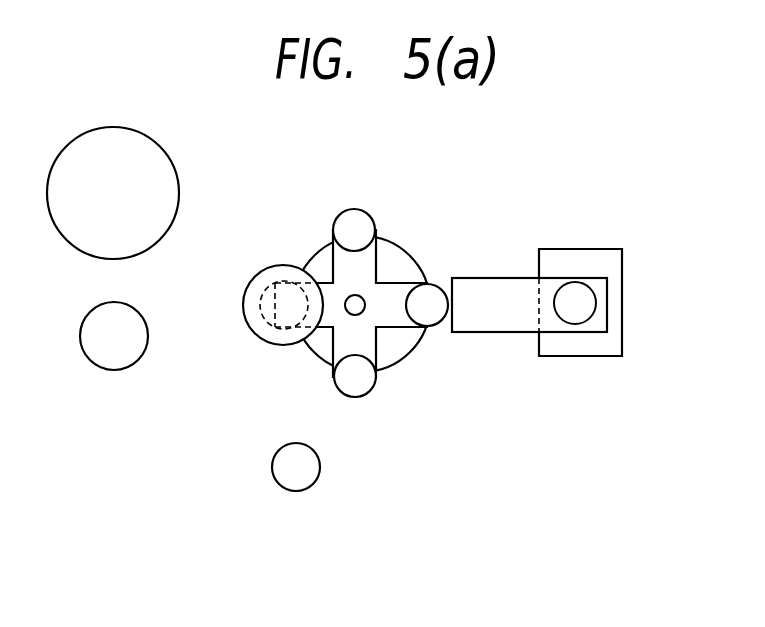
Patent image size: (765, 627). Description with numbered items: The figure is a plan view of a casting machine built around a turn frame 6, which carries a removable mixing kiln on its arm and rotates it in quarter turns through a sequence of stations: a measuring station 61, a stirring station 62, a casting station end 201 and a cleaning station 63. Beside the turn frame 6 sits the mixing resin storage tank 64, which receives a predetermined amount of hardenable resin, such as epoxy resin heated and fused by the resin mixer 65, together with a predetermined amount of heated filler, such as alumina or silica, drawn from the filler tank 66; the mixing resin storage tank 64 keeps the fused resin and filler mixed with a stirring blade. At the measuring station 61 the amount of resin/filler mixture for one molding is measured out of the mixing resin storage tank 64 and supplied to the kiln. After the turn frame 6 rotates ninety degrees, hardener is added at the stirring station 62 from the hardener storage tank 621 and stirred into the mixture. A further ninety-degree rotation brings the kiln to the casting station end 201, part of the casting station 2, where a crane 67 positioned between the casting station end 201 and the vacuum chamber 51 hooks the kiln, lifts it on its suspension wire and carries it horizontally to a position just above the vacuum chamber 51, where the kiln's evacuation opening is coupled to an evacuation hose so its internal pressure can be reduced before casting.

The casting station 2 is at (594, 265).
The turn frame 6 is at (400, 252).
The vacuum chamber 51 is at (623, 275).
The measuring station 61 is at (271, 290).
The stirring station 62 is at (365, 385).
The cleaning station 63 is at (358, 217).
The mixing resin storage tank 64 is at (275, 345).
The resin mixer 65 is at (175, 170).
The filler tank 66 is at (147, 328).
The crane 67 is at (490, 288).
The casting station end 201 is at (492, 323).
The hardener storage tank 621 is at (273, 458).